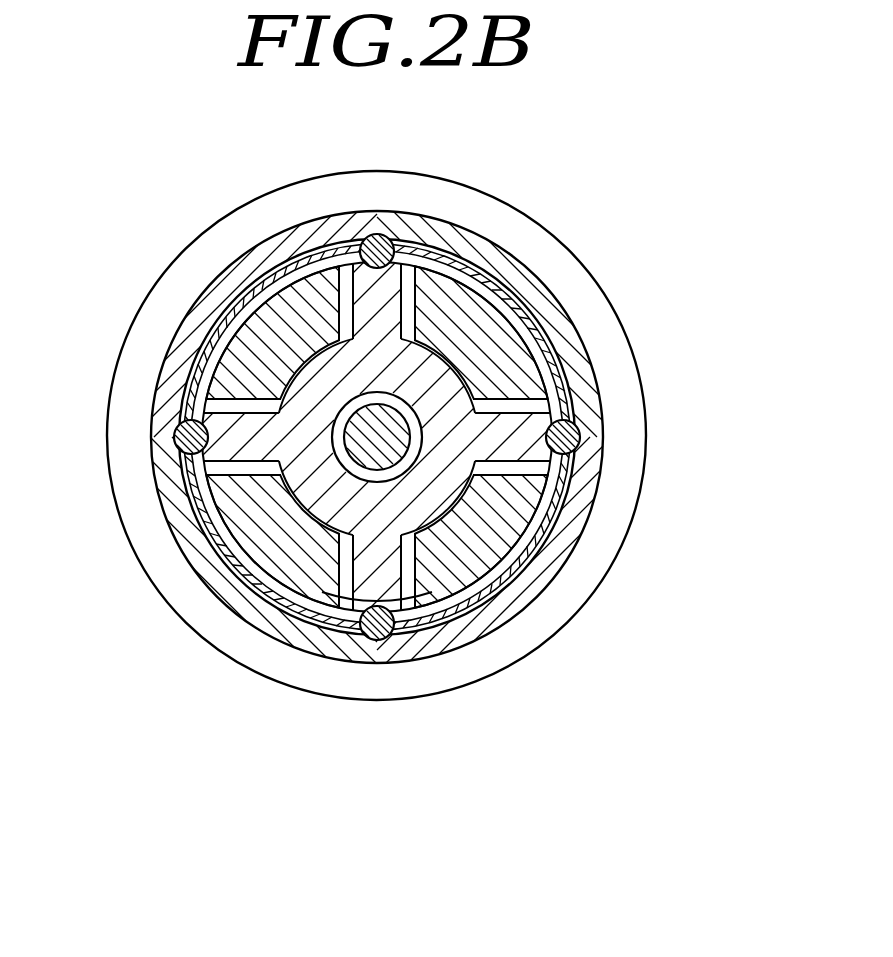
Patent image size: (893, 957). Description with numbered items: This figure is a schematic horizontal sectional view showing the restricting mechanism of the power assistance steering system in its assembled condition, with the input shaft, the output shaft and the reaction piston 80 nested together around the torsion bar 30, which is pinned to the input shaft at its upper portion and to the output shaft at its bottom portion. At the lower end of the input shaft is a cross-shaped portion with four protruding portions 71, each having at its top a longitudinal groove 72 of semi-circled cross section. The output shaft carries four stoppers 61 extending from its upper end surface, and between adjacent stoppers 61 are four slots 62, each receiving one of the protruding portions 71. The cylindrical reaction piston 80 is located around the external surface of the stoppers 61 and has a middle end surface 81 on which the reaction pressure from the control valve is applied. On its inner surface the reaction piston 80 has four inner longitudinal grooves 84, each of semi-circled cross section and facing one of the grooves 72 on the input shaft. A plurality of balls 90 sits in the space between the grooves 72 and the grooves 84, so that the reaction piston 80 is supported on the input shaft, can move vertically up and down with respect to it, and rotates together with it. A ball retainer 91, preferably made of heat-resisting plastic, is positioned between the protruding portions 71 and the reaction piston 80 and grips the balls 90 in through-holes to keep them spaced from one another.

The torsion bar 30 is at (390, 425).
The stoppers 61 is at (510, 527).
The slots 62 is at (566, 490).
The protruding portions 71 is at (540, 390).
The longitudinal groove 72 is at (537, 428).
The reaction piston 80 is at (500, 607).
The middle end surface 81 is at (628, 448).
The inner longitudinal grooves 84 is at (372, 636).
The balls 90 is at (381, 638).
The ball retainer 91 is at (198, 530).